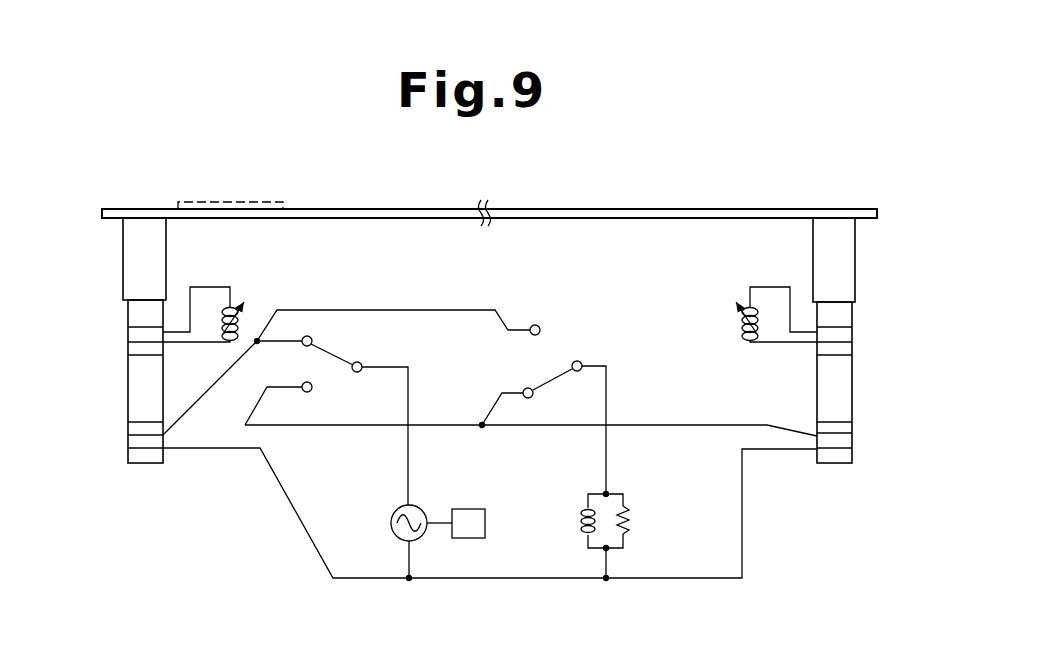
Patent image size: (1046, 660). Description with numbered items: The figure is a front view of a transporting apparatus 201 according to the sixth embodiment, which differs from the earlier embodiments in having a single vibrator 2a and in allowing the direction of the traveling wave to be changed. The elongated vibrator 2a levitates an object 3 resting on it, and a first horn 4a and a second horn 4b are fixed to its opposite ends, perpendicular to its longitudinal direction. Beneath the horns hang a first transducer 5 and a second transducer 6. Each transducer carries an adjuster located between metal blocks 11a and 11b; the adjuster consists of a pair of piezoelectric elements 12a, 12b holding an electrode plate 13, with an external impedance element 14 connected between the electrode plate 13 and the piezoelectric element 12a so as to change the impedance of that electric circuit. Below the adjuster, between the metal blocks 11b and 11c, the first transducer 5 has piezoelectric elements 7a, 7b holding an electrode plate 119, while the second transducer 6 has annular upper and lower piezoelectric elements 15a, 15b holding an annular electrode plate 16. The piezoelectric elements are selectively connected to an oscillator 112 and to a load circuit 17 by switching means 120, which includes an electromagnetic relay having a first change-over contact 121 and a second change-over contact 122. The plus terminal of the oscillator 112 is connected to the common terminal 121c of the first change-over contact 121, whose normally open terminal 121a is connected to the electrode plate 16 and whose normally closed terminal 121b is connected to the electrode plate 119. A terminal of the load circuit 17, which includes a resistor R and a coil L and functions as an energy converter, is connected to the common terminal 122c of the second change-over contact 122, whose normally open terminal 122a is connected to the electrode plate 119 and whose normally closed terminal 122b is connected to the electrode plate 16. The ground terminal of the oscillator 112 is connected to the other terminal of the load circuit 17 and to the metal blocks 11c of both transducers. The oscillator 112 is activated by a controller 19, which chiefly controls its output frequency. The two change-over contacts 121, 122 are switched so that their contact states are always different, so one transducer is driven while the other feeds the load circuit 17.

The transporting apparatus 201 is at (893, 131).
The vibrator 2a is at (745, 208).
The object 3 is at (218, 200).
The first horn 4a is at (166, 238).
The second horn 4b is at (813, 238).
The first transducer 5 is at (180, 467).
The second transducer 6 is at (811, 469).
The metal block 11a is at (127, 322).
The metal block 11b is at (132, 404).
The metal block 11c is at (160, 465).
The piezoelectric element 12a is at (132, 333).
The piezoelectric element 12b is at (163, 350).
The electrode plate 13 is at (127, 348).
The external impedance element 14 is at (248, 310).
The piezoelectric element 7a is at (128, 425).
The piezoelectric element 7b is at (128, 452).
The electrode plate 119 is at (127, 435).
The upper piezoelectric element 15a is at (852, 421).
The lower piezoelectric element 15b is at (852, 448).
The electrode plate 16 is at (852, 435).
The switching means 120 is at (415, 286).
The first change-over contact 121 is at (352, 387).
The normally open terminal 121a is at (303, 385).
The normally closed terminal 121b is at (308, 336).
The common terminal 121c is at (361, 362).
The second change-over contact 122 is at (581, 379).
The normally open terminal 122a is at (534, 323).
The normally closed terminal 122b is at (530, 397).
The common terminal 122c is at (583, 362).
The oscillator 112 is at (426, 505).
The controller 19 is at (468, 538).
The load circuit 17 is at (617, 515).
The coil L is at (578, 520).
The resistor R is at (630, 518).